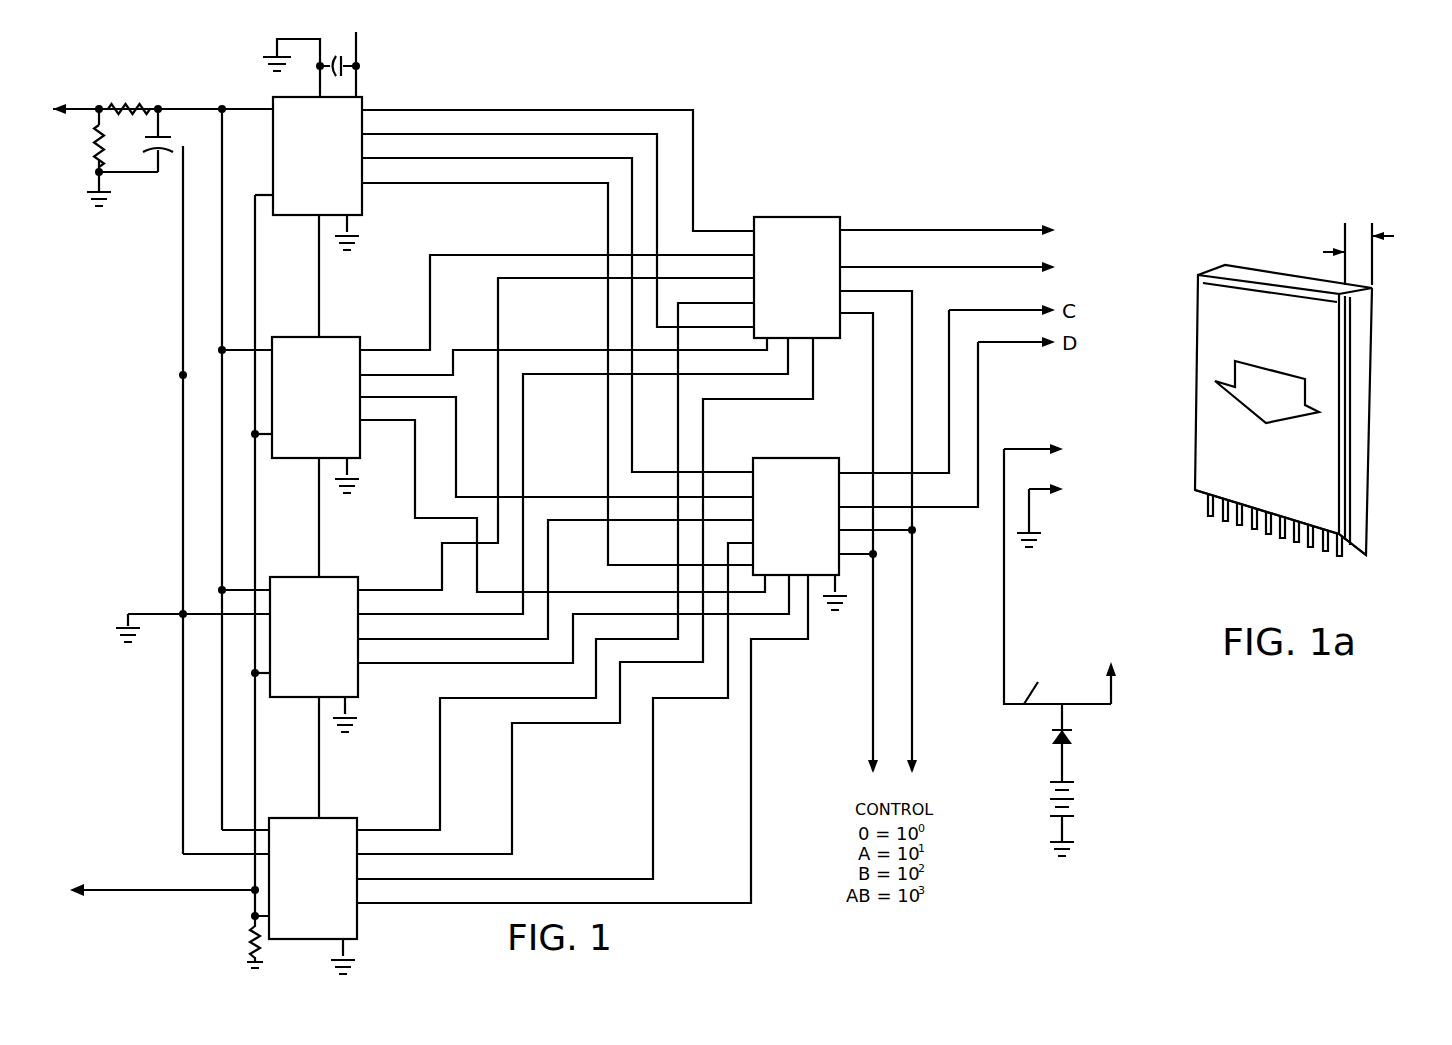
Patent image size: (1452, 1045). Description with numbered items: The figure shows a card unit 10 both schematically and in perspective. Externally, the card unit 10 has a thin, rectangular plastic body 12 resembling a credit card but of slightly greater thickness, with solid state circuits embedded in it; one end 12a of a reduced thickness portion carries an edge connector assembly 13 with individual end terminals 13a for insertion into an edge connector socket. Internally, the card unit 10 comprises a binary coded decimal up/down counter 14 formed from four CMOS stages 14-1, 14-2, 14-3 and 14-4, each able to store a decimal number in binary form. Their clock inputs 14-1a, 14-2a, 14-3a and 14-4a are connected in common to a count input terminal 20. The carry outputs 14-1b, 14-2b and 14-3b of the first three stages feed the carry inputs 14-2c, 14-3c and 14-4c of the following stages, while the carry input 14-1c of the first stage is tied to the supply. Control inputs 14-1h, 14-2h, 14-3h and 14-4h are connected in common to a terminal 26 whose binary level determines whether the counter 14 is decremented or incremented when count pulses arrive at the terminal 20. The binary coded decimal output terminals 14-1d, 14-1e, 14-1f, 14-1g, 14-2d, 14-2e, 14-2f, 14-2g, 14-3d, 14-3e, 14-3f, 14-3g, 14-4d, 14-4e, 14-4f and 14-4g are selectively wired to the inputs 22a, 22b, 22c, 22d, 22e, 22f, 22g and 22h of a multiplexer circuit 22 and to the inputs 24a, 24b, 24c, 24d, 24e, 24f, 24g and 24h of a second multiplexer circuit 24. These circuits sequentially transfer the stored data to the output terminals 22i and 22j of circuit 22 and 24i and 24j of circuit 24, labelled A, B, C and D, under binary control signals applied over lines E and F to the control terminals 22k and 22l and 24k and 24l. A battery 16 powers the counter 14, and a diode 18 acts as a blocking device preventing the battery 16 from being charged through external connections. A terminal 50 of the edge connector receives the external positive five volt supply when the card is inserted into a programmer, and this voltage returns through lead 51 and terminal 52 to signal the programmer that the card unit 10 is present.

In FIG. 1, the card unit 10 is at (222, 55).
In FIG. 1A, the card unit 10 is at (1420, 280).
In FIG. 1A, the body 12 is at (1318, 350).
In FIG. 1A, the end of reduced thickness portion 12a is at (1200, 494).
In FIG. 1A, the edge connector assembly 13 is at (1313, 552).
In FIG. 1A, the end terminals 13a is at (1293, 542).
In FIG. 1, the counter 14 is at (232, 69).
In FIG. 1A, the counter 14 is at (1367, 534).
In FIG. 1, the first counter stage 14-1 is at (338, 163).
In FIG. 1, the clock input of first stage 14-1a is at (268, 100).
In FIG. 1, the carry output of first stage 14-1b is at (319, 240).
In FIG. 1, the carry input of first stage 14-1c is at (320, 88).
In FIG. 1, the binary coded decimal output terminal 14-1d is at (382, 106).
In FIG. 1, the binary coded decimal output terminal 14-1e is at (380, 132).
In FIG. 1, the binary coded decimal output terminal 14-1f is at (380, 156).
In FIG. 1, the binary coded decimal output terminal 14-1g is at (385, 181).
In FIG. 1, the control input of first stage 14-1h is at (266, 192).
In FIG. 1, the second counter stage 14-2 is at (336, 403).
In FIG. 1, the clock input of second stage 14-2a is at (263, 348).
In FIG. 1, the carry output of second stage 14-2b is at (319, 490).
In FIG. 1, the carry input of second stage 14-2c is at (319, 290).
In FIG. 1, the binary coded decimal output terminal 14-2d is at (368, 345).
In FIG. 1, the binary coded decimal output terminal 14-2e is at (365, 373).
In FIG. 1, the binary coded decimal output terminal 14-2f is at (365, 396).
In FIG. 1, the binary coded decimal output terminal 14-2g is at (372, 419).
In FIG. 1, the control input of second stage 14-2h is at (263, 440).
In FIG. 1, the third counter stage 14-3 is at (332, 642).
In FIG. 1, the clock input of third stage 14-3a is at (261, 588).
In FIG. 1, the carry output of third stage 14-3b is at (319, 724).
In FIG. 1, the carry input of third stage 14-3c is at (319, 558).
In FIG. 1, the binary coded decimal output terminal 14-3d is at (368, 588).
In FIG. 1, the binary coded decimal output terminal 14-3e is at (368, 612).
In FIG. 1, the binary coded decimal output terminal 14-3f is at (368, 637).
In FIG. 1, the binary coded decimal output terminal 14-3g is at (376, 661).
In FIG. 1, the control input of third stage 14-3h is at (261, 678).
In FIG. 1, the fourth counter stage 14-4 is at (332, 883).
In FIG. 1, the clock input of fourth stage 14-4a is at (260, 828).
In FIG. 1, the carry input of fourth stage 14-4c is at (319, 800).
In FIG. 1, the binary coded decimal output terminal 14-4d is at (368, 828).
In FIG. 1, the binary coded decimal output terminal 14-4e is at (368, 852).
In FIG. 1, the binary coded decimal output terminal 14-4f is at (368, 877).
In FIG. 1, the binary coded decimal output terminal 14-4g is at (378, 901).
In FIG. 1, the control input of fourth stage 14-4h is at (253, 920).
In FIG. 1, the battery 16 is at (1048, 798).
In FIG. 1, the diode 18 is at (1052, 734).
In FIG. 1, the count input terminal 20 is at (92, 107).
In FIG. 1, the multiplexer circuit 22 is at (812, 267).
In FIG. 1, the multiplexer input 22a is at (718, 228).
In FIG. 1, the multiplexer input 22b is at (722, 254).
In FIG. 1, the multiplexer input 22c is at (724, 278).
In FIG. 1, the multiplexer input 22d is at (726, 302).
In FIG. 1, the multiplexer input 22e is at (736, 326).
In FIG. 1, the multiplexer input 22f is at (740, 350).
In FIG. 1, the multiplexer input 22g is at (756, 373).
In FIG. 1, the multiplexer input 22h is at (766, 398).
In FIG. 1, the output terminal of multiplexer 22 22i is at (852, 228).
In FIG. 1, the output terminal of multiplexer 22 22j is at (860, 265).
In FIG. 1, the control terminal of multiplexer 22 22k is at (892, 288).
In FIG. 1, the control terminal of multiplexer 22 22l is at (862, 316).
In FIG. 1, the multiplexer circuit 24 is at (808, 532).
In FIG. 1, the multiplexer input 24a is at (740, 470).
In FIG. 1, the multiplexer input 24b is at (744, 496).
In FIG. 1, the multiplexer input 24c is at (744, 520).
In FIG. 1, the multiplexer input 24d is at (744, 543).
In FIG. 1, the multiplexer input 24e is at (740, 553).
In FIG. 1, the multiplexer input 24f is at (745, 578).
In FIG. 1, the multiplexer input 24g is at (778, 613).
In FIG. 1, the multiplexer input 24h is at (790, 637).
In FIG. 1, the output terminal of multiplexer 24 24i is at (856, 462).
In FIG. 1, the output terminal of multiplexer 24 24j is at (852, 506).
In FIG. 1, the control terminal of multiplexer 24 24k is at (852, 530).
In FIG. 1, the control terminal of multiplexer 24 24l is at (856, 556).
In FIG. 1, the terminal 26 is at (108, 889).
In FIG. 1, the terminal 50 is at (1022, 449).
In FIG. 1, the lead 51 is at (1040, 690).
In FIG. 1, the terminal 52 is at (1114, 690).